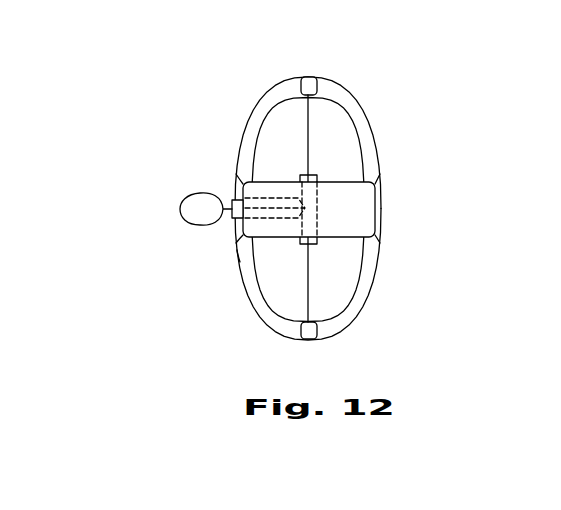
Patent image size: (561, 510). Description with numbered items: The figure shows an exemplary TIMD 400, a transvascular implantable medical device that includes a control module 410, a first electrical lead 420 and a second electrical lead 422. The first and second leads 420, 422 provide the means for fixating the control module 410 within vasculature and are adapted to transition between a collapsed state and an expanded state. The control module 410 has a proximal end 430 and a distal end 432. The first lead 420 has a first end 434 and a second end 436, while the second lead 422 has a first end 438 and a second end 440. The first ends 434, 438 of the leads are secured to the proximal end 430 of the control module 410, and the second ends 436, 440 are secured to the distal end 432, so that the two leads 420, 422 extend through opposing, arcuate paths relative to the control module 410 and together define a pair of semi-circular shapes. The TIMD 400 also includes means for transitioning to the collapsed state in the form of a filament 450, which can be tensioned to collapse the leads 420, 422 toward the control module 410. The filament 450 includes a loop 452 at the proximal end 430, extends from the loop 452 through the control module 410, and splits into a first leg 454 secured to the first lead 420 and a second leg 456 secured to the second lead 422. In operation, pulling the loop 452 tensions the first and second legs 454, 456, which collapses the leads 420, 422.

The TIMD 400 is at (278, 202).
The control module 410 is at (270, 171).
The first electrical lead 420 is at (224, 116).
The second electrical lead 422 is at (244, 307).
The proximal end 430 is at (237, 250).
The distal end 432 is at (362, 212).
The first end 434 is at (242, 176).
The second end 436 is at (377, 178).
The first end 438 is at (248, 234).
The second end 440 is at (377, 232).
The filament 450 is at (167, 196).
The loop 452 is at (182, 224).
The first leg 454 is at (309, 124).
The second leg 456 is at (309, 296).